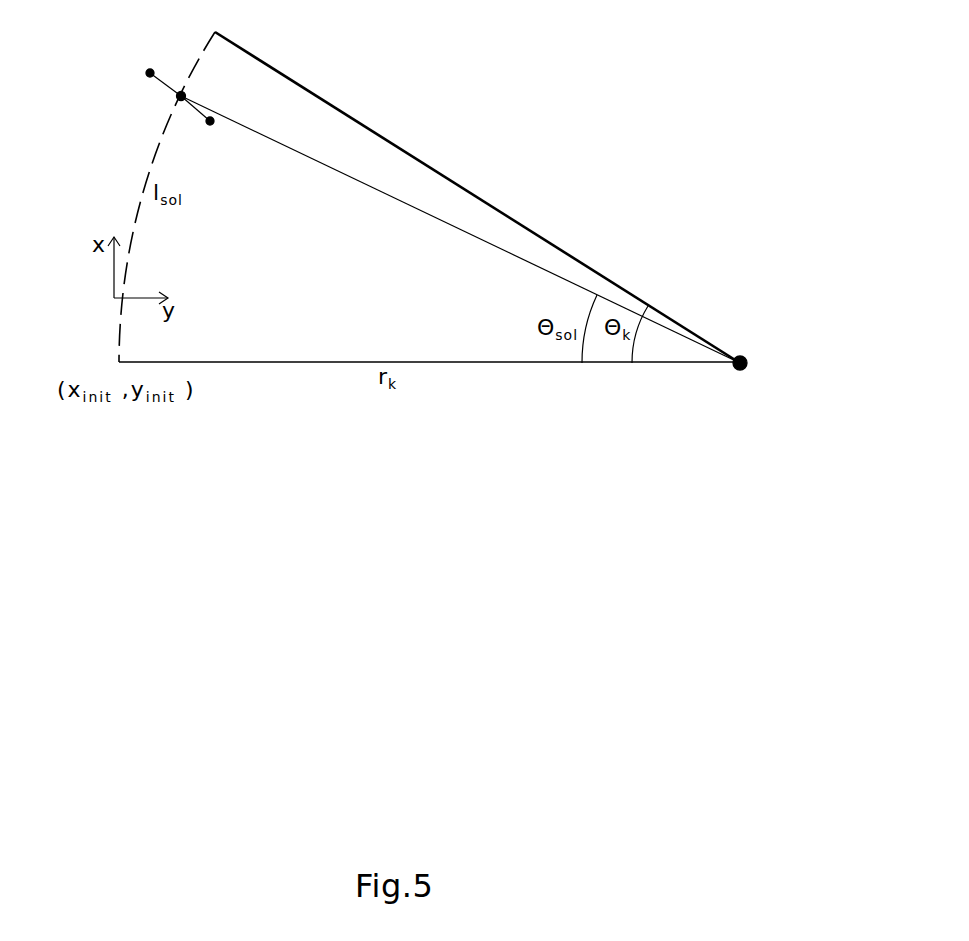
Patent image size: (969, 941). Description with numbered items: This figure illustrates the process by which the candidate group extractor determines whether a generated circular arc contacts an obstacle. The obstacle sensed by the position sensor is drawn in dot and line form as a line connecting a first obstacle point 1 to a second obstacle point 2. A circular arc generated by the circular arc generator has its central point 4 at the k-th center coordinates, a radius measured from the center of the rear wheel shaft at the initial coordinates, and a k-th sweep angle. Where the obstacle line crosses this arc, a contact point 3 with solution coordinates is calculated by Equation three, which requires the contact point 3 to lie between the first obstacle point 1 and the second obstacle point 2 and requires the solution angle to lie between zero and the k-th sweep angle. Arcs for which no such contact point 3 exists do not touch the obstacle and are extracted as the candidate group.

The first obstacle point (x_ob1, y_ob1) 1 is at (114, 63).
The second obstacle point (x_ob2, y_ob2) 2 is at (242, 128).
The solution point (x_sol, y_sol) 3 is at (124, 112).
The circle center ((x_c)_k, (y_c)_k) 4 is at (737, 381).